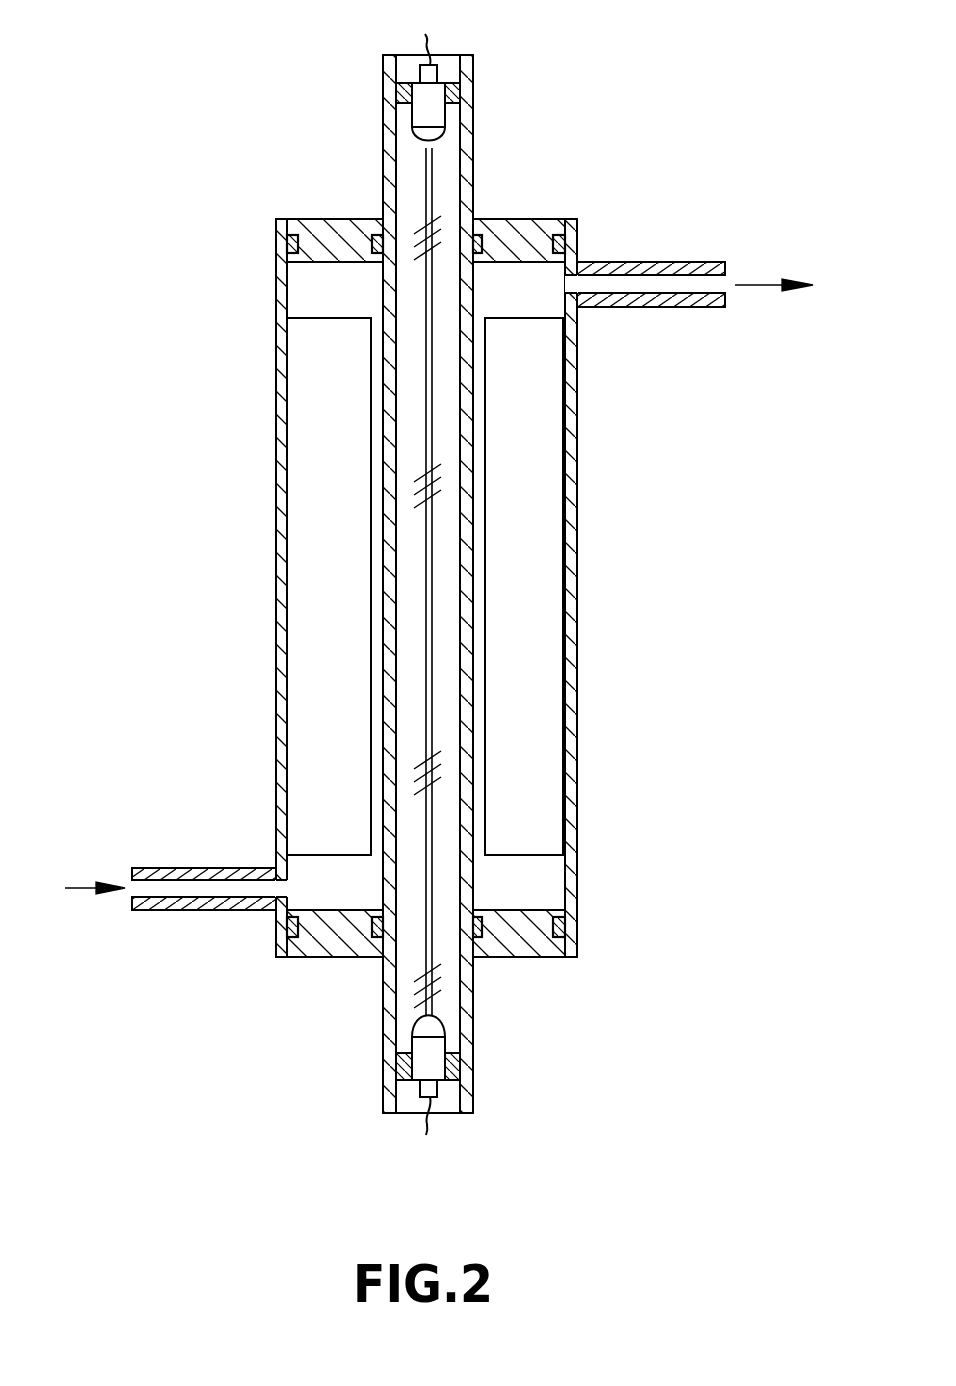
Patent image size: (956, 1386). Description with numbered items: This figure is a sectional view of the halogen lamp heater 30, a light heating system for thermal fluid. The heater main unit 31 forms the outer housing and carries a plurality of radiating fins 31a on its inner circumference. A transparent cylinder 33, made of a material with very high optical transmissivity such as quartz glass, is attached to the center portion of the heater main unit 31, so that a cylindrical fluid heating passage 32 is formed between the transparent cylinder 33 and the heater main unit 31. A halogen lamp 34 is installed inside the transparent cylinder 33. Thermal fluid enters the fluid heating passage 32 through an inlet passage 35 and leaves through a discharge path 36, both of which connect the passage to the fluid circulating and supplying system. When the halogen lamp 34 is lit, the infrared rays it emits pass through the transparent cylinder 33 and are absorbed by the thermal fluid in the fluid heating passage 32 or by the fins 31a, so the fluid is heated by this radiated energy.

The halogen lamp heater 30 is at (175, 293).
The heater main unit 31 is at (578, 870).
The radiating fins 31a is at (313, 615).
The fluid heating passage 32 is at (527, 870).
The transparent cylinder 33 is at (468, 127).
The halogen lamp 34 is at (418, 955).
The inlet passage 35 is at (177, 890).
The discharge path 36 is at (640, 283).